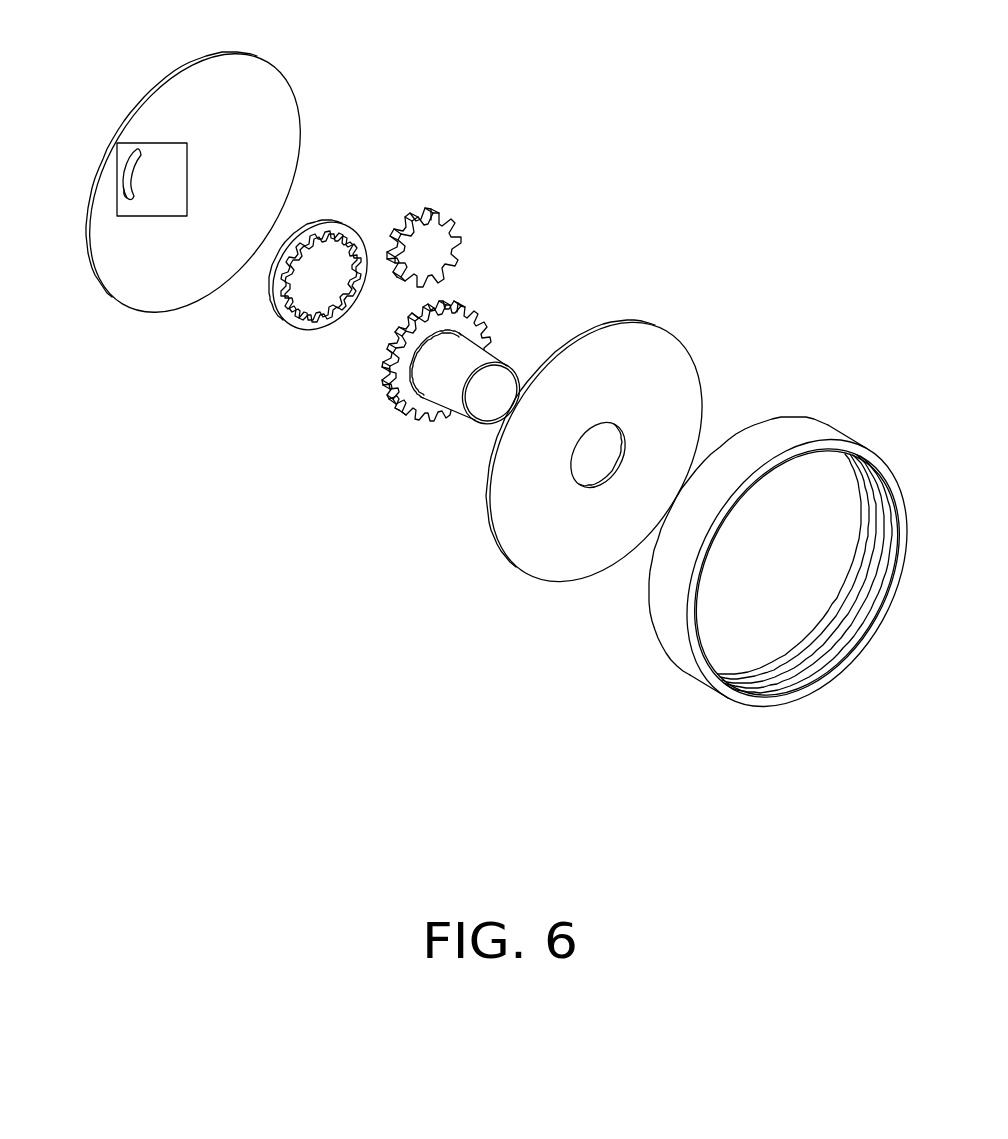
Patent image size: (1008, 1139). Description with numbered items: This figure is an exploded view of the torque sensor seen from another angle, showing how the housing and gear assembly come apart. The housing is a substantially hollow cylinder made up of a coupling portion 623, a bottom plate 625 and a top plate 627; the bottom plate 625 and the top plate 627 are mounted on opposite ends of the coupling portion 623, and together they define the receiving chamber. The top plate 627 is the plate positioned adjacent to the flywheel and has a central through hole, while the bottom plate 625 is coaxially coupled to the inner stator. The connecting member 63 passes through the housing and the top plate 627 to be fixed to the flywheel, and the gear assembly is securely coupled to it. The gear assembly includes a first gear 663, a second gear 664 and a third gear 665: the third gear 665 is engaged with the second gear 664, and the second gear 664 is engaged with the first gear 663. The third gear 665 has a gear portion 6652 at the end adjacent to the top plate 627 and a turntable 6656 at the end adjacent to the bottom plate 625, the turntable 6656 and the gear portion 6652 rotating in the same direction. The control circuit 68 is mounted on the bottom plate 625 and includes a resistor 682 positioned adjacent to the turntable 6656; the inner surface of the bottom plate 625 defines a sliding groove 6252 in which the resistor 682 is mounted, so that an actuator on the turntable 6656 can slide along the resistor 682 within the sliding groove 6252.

The control circuit 68 is at (148, 143).
The resistor 682 is at (123, 141).
The sliding groove 6252 is at (132, 204).
The bottom plate 625 is at (268, 97).
The third gear 665 is at (309, 280).
The gear portion 6652 is at (320, 300).
The turntable 6656 is at (285, 313).
The second gear 664 is at (445, 238).
The first gear 663 is at (403, 413).
The connecting member 63 is at (460, 398).
The top plate 627 is at (628, 347).
The coupling portion 623 is at (762, 432).